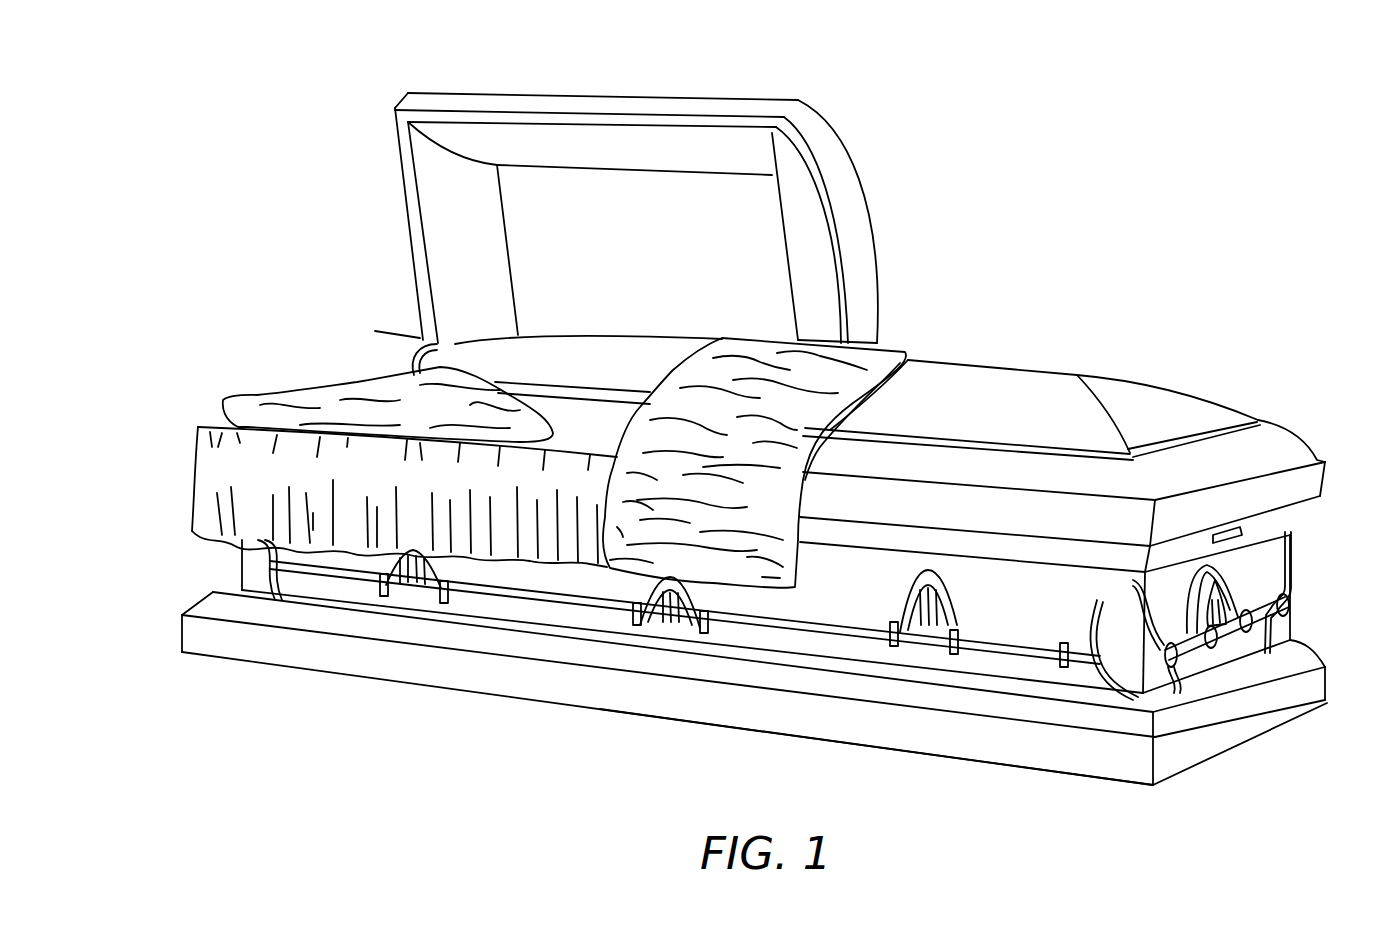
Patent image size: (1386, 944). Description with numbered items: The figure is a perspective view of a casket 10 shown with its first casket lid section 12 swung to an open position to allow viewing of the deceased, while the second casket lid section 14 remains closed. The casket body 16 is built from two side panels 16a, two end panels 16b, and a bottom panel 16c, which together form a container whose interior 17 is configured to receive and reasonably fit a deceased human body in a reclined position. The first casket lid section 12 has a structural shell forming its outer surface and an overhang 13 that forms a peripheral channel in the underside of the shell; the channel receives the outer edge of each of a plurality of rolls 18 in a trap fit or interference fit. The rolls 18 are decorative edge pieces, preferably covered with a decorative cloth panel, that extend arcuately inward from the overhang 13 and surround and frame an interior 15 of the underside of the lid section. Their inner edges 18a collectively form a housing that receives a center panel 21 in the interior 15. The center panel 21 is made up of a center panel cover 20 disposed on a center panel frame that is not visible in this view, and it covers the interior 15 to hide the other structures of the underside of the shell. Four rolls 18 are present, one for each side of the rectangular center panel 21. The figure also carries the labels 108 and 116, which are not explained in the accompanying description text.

The casket 10 is at (1213, 169).
The first casket lid section 12 is at (847, 145).
The overhang 13 is at (665, 103).
The second casket lid section 14 is at (1087, 372).
The interior 15 is at (636, 176).
The casket body 16 is at (453, 688).
The side panels 16a is at (237, 555).
The end panels 16b is at (1288, 570).
The bottom panel 16c is at (923, 755).
The interior 17 is at (567, 415).
The rolls 18 is at (728, 138).
The inner edges 18a is at (585, 173).
The center panel cover 20 is at (678, 264).
The center panel 21 is at (728, 204).
The foot end cap crown 108 is at (1267, 453).
The casket interior 116 is at (985, 198).